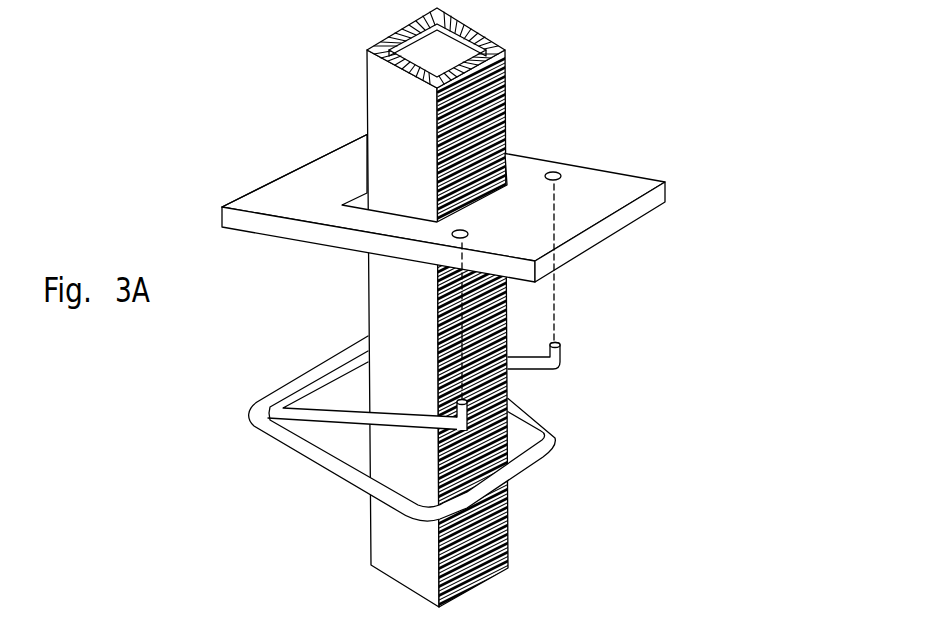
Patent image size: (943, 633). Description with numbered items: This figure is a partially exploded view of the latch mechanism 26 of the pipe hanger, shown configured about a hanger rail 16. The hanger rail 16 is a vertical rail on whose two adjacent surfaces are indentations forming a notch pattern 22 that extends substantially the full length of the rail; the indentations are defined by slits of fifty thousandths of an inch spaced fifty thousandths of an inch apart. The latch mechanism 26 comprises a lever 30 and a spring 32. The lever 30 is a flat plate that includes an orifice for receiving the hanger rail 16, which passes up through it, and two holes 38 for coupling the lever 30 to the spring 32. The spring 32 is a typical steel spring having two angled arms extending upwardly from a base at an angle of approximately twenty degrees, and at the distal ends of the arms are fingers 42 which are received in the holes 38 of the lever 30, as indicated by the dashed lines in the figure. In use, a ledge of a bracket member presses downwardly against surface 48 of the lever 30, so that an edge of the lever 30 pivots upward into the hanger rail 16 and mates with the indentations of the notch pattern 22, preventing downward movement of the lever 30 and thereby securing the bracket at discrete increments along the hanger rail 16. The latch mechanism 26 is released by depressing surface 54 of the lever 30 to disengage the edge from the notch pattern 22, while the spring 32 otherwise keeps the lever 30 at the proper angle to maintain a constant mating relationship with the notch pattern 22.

The hanger rail 16 is at (394, 108).
The notch pattern 22 is at (500, 82).
The latch mechanism 26 is at (690, 70).
The lever 30 is at (596, 229).
The spring 32 is at (279, 450).
The holes 38 is at (464, 230).
The fingers 42 is at (509, 418).
The surface 48 is at (305, 188).
The surface 54 is at (600, 203).